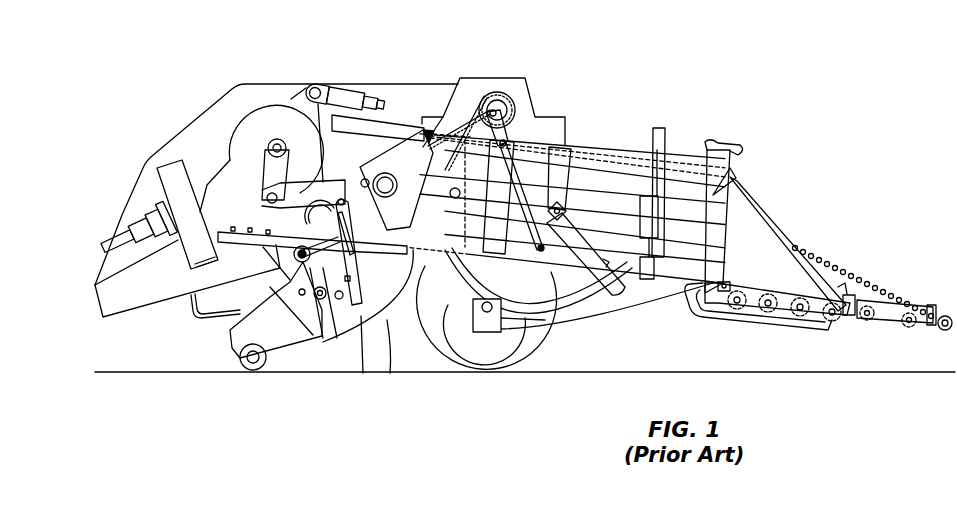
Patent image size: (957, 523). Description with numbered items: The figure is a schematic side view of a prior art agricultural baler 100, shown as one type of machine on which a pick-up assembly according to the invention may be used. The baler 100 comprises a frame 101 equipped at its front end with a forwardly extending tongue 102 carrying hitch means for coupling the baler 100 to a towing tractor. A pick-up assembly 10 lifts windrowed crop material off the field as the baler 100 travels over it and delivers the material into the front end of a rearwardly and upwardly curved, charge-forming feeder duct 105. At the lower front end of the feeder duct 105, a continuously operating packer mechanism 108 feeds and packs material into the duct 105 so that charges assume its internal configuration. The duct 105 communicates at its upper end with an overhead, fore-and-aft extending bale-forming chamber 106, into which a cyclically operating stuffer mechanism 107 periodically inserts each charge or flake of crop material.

The agricultural baler 100 is at (608, 62).
The pick-up assembly 10 is at (237, 338).
The frame 101 is at (406, 252).
The tongue 102 is at (160, 294).
The feeder duct 105 is at (390, 362).
The bale-forming chamber 106 is at (588, 178).
The stuffer mechanism 107 is at (358, 360).
The packer mechanism 108 is at (338, 332).